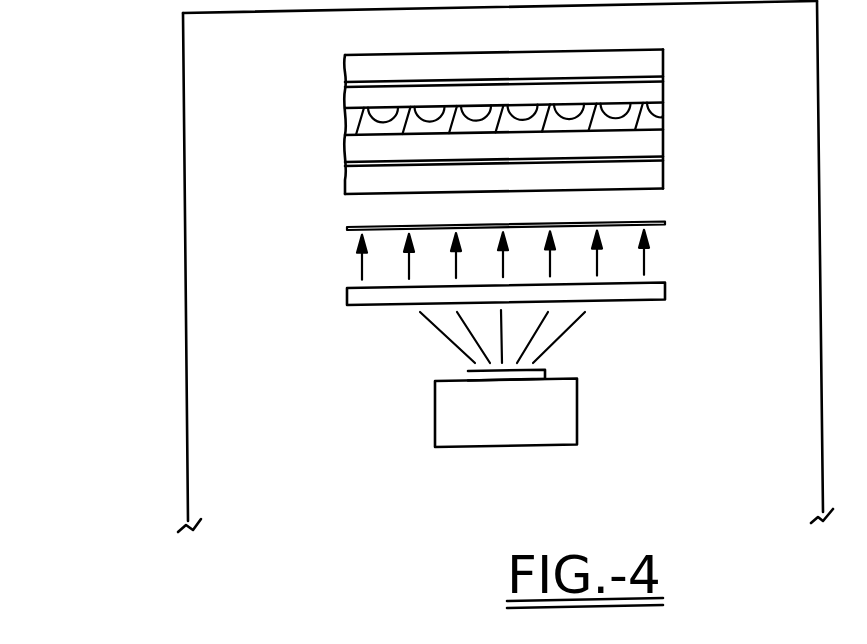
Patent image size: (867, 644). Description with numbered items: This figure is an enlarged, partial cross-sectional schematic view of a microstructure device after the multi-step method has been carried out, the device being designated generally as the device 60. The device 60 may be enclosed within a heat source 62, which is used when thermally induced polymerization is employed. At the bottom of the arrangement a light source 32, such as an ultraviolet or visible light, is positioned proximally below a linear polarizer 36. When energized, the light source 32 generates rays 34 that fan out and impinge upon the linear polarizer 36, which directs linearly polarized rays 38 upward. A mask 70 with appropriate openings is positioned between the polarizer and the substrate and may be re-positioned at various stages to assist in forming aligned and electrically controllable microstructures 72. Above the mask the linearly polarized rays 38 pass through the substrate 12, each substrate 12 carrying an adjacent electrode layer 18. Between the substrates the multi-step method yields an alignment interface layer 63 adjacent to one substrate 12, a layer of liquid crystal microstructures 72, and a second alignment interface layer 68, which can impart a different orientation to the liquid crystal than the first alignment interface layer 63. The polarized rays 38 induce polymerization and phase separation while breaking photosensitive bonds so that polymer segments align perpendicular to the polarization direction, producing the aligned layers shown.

The substrate 12 is at (658, 62).
The electrode layer 18 is at (655, 80).
The light source 32 is at (570, 404).
The rays 34 is at (563, 355).
The linear polarizer 36 is at (658, 290).
The linearly polarized rays 38 is at (665, 253).
The device 60 is at (351, 455).
The heat source 62 is at (183, 232).
The alignment interface layer 63 is at (355, 152).
The second alignment interface layer 68 is at (353, 99).
The masks 70 is at (352, 227).
The microstructures 72 is at (352, 125).